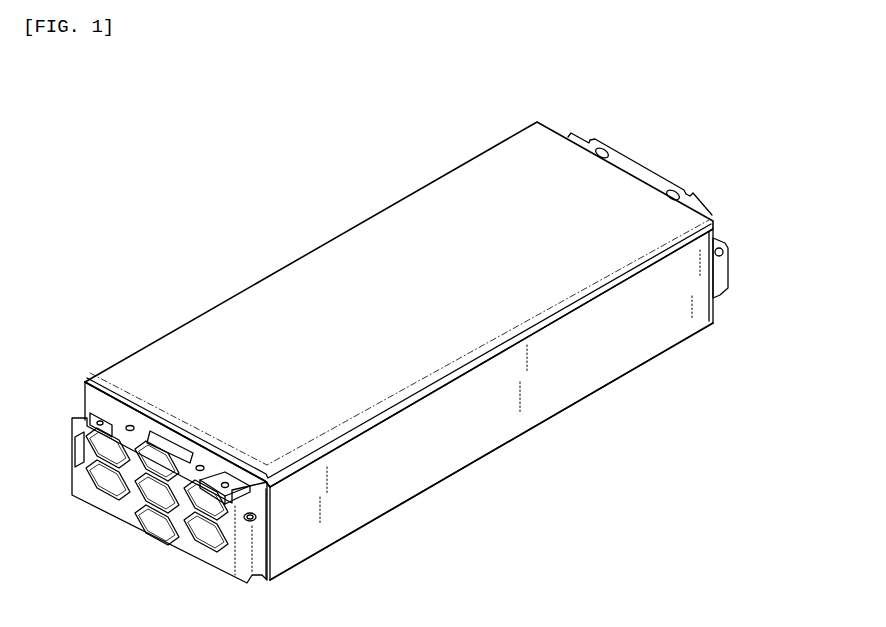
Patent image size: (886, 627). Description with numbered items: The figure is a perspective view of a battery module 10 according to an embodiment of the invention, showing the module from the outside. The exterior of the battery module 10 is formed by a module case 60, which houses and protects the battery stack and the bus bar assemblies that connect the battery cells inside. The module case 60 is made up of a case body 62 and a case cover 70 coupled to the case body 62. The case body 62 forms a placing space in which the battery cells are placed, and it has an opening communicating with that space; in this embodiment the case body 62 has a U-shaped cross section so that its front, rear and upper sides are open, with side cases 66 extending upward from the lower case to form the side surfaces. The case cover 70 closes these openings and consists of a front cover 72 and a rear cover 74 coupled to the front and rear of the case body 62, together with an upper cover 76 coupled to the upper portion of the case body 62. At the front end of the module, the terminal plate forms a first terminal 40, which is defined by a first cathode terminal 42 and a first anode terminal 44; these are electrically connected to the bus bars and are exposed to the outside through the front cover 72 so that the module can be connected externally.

The battery module 10 is at (50, 78).
The first terminal 40 is at (135, 450).
The first cathode terminal 42 is at (183, 503).
The first anode terminal 44 is at (85, 396).
The module case 60 is at (402, 518).
The case body 62 is at (470, 466).
The side case 66 is at (570, 395).
The case cover 70 is at (461, 367).
The front cover 72 is at (220, 565).
The rear cover 74 is at (722, 273).
The upper cover 76 is at (317, 262).